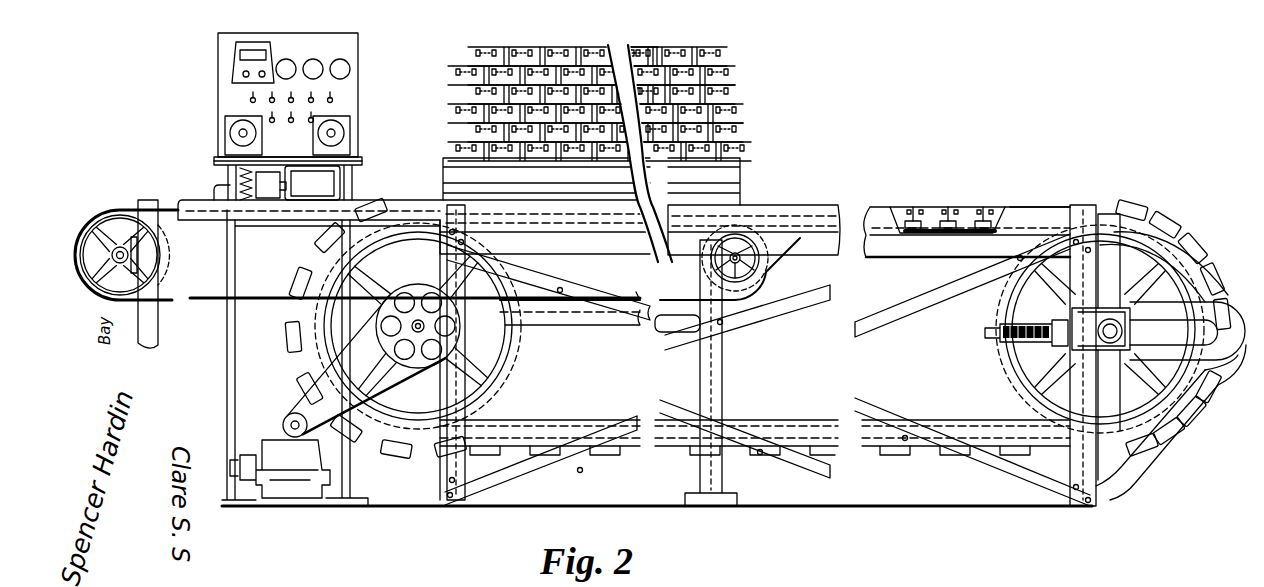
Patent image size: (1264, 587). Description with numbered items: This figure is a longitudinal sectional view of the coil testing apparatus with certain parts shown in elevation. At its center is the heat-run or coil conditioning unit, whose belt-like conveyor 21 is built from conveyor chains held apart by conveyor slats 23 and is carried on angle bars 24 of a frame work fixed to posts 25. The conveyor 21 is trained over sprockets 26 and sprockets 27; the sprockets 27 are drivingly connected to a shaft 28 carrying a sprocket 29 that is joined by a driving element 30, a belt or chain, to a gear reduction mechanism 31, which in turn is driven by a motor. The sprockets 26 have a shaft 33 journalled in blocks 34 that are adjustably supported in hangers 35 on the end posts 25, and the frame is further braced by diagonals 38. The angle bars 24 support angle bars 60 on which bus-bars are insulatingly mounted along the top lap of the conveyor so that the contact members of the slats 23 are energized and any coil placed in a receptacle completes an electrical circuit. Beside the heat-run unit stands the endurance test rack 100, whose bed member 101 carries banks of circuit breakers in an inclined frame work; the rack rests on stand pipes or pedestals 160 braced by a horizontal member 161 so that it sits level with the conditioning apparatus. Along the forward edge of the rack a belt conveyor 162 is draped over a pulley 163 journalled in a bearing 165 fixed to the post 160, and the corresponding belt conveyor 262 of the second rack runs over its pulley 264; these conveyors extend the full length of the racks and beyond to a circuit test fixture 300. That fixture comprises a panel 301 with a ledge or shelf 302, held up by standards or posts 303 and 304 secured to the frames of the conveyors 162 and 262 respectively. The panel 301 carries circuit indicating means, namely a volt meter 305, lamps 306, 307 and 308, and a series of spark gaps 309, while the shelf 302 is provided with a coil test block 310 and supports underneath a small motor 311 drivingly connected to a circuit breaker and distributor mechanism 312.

The belt-like conveyor 21 is at (976, 212).
The conveyor slats 23 is at (928, 212).
The angle bars 24 is at (1026, 215).
The posts 25 is at (1100, 286).
The sprockets 26 is at (1012, 350).
The sprockets 27 is at (515, 356).
The shaft 28 is at (418, 320).
The sprocket 29 is at (388, 342).
The driving element 30 is at (300, 412).
The gear reduction mechanism 31 is at (292, 412).
The shaft 33 is at (1114, 343).
The blocks 34 is at (1124, 333).
The hangers 35 is at (1226, 346).
The diagonals 38 is at (862, 404).
The angle bars 60 is at (900, 250).
The endurance test rack 100 is at (736, 102).
The bed member 101 is at (730, 198).
The stand pipes or pedestals 160 is at (720, 370).
The horizontal member 161 is at (618, 326).
The belt conveyor 162 is at (668, 300).
The pulley 163 is at (762, 262).
The bearing 165 is at (742, 256).
The belt conveyor 262 is at (271, 298).
The pulley 264 is at (104, 226).
The circuit test fixture 300 is at (346, 33).
The panel 301 is at (358, 47).
The ledge or shelf 302 is at (352, 160).
The standard or post 303 is at (226, 173).
The standard or post 304 is at (345, 182).
The volt meter 305 is at (246, 42).
The lamp 306 is at (288, 58).
The lamp 307 is at (315, 58).
The lamp 308 is at (344, 68).
The spark gaps 309 is at (336, 106).
The coil test block 310 is at (346, 146).
The small motor 311 is at (316, 192).
The circuit breaker and distributor mechanism 312 is at (268, 192).